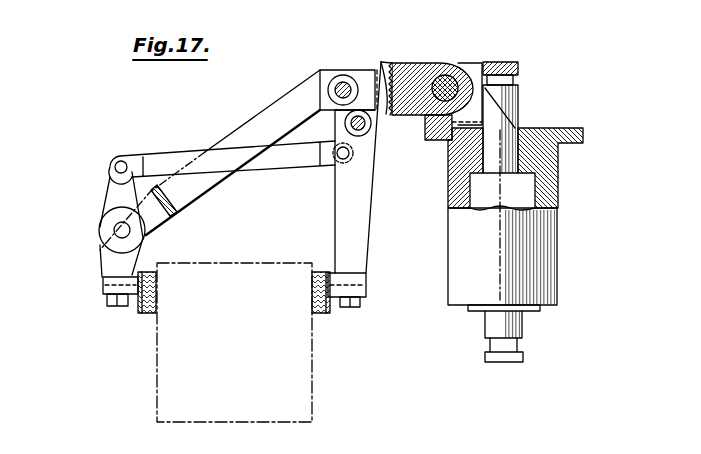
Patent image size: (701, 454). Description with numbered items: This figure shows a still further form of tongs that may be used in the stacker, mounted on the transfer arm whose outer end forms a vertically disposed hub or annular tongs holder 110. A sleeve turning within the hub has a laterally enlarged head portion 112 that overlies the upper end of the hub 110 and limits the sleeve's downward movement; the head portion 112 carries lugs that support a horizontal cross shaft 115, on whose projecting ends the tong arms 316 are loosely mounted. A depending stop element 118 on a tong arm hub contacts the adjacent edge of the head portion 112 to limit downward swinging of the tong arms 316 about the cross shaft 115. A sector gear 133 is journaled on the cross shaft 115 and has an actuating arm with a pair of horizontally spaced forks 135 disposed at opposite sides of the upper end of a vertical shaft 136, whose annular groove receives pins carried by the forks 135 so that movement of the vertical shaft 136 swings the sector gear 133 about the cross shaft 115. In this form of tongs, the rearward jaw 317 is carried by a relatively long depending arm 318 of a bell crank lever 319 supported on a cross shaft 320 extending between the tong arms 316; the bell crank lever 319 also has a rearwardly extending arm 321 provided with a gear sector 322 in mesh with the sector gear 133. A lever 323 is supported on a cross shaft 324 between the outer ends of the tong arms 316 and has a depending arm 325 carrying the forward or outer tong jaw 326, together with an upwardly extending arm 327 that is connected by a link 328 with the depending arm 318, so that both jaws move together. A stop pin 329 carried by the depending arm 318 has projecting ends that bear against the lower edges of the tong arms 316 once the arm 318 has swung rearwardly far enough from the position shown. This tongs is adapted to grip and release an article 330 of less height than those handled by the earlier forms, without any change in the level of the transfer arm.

The hub or annular tongs holder 110 is at (448, 225).
The head portion 112 is at (447, 165).
The cross shaft 115 is at (440, 97).
The stop element 118 is at (462, 138).
The sector gear 133 is at (430, 63).
The forks 135 is at (480, 62).
The vertical shaft 136 is at (512, 105).
The tong arms 316 is at (272, 108).
The rearward jaw 317 is at (331, 318).
The depending arm 318 is at (360, 225).
The bell crank lever 319 is at (333, 80).
The cross shaft 320 is at (345, 75).
The rearwardly extending arm 321 is at (383, 62).
The gear sector 322 is at (396, 66).
The lever 323 is at (101, 226).
The cross shaft 324 is at (118, 233).
The depending arm 325 is at (110, 268).
The forward tong member or jaw 326 is at (142, 318).
The upwardly extending arm 327 is at (110, 187).
The link 328 is at (288, 165).
The stop pin 329 is at (360, 135).
The article 330 is at (308, 383).